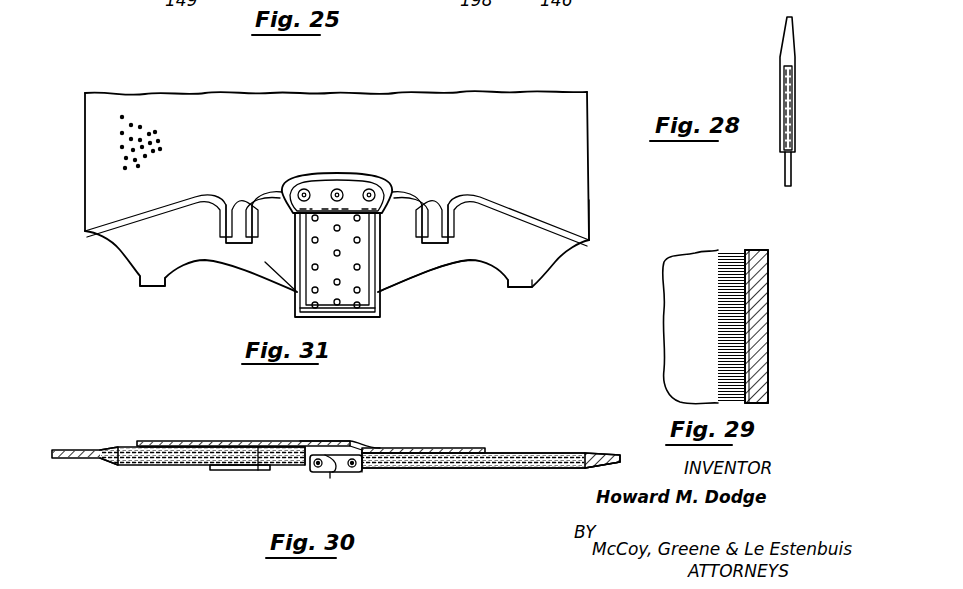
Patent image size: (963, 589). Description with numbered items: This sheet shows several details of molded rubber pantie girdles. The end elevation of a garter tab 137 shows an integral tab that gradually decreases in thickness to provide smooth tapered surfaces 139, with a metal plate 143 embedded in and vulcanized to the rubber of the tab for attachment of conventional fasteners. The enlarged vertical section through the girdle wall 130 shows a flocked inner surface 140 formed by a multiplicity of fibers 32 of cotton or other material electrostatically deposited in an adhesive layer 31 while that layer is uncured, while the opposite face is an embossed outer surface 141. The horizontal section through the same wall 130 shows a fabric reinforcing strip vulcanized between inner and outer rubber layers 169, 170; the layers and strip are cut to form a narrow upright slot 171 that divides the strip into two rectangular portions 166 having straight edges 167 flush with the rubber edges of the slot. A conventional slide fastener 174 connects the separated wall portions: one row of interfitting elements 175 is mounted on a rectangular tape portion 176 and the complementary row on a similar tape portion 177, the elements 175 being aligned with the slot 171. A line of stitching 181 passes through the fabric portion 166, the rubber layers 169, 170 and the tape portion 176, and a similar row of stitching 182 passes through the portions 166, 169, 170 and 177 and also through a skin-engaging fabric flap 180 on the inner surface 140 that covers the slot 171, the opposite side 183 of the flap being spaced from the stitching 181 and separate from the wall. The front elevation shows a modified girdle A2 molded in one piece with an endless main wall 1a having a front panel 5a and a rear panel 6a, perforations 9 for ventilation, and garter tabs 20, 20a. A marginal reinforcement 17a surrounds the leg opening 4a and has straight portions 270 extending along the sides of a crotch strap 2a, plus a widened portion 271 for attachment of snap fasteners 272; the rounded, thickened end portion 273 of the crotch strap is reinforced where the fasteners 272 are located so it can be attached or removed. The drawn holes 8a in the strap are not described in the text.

In FIG. 31, the main wall 1a is at (85, 163).
In FIG. 31, the girdle A2 is at (140, 86).
In FIG. 31, the perforations 9 is at (156, 138).
In FIG. 31, the front panel 5a is at (452, 98).
In FIG. 31, the leg opening 4a is at (568, 212).
In FIG. 31, the marginal reinforcement 17a is at (482, 191).
In FIG. 31, the garter tab 20 is at (228, 236).
In FIG. 31, the garter tab 20a is at (142, 276).
In FIG. 31, the widened portion 271 is at (352, 175).
In FIG. 31, the snap fasteners 272 is at (304, 189).
In FIG. 31, the end portion 273 is at (337, 189).
In FIG. 31, the crotch strap 2a is at (297, 262).
In FIG. 31, the plate holes 8a is at (340, 253).
In FIG. 31, the straight portions 270 is at (297, 287).
In FIG. 31, the rear panel 6a is at (412, 268).
In FIG. 28, the tapered surfaces 139 is at (782, 40).
In FIG. 28, the garter tab 137 is at (782, 80).
In FIG. 28, the metal plate 143 is at (784, 164).
In FIG. 29, the girdle wall 130 is at (770, 266).
In FIG. 30, the girdle wall 130 is at (68, 448).
In FIG. 29, the adhesive layer 31 is at (746, 251).
In FIG. 29, the fibers 32 is at (720, 298).
In FIG. 29, the embossed outer surface 141 is at (768, 356).
In FIG. 30, the embossed outer surface 141 is at (604, 464).
In FIG. 30, the rectangular portions 166 is at (158, 466).
In FIG. 30, the opposite side of flap 183 is at (150, 440).
In FIG. 30, the inner rubber layer 169 is at (184, 448).
In FIG. 30, the tape portion 176 is at (228, 470).
In FIG. 30, the line of stitching 181 is at (260, 472).
In FIG. 30, the straight edges 167 is at (310, 446).
In FIG. 30, the fabric flap 180 is at (322, 440).
In FIG. 30, the slot 171 is at (346, 449).
In FIG. 30, the slide fastener 174 is at (310, 480).
In FIG. 30, the interfitting elements 175 is at (332, 474).
In FIG. 30, the row of stitching 182 is at (408, 448).
In FIG. 30, the tape portion 177 is at (444, 470).
In FIG. 30, the outer rubber layer 170 is at (484, 470).
In FIG. 30, the flocked inner surface 140 is at (592, 454).